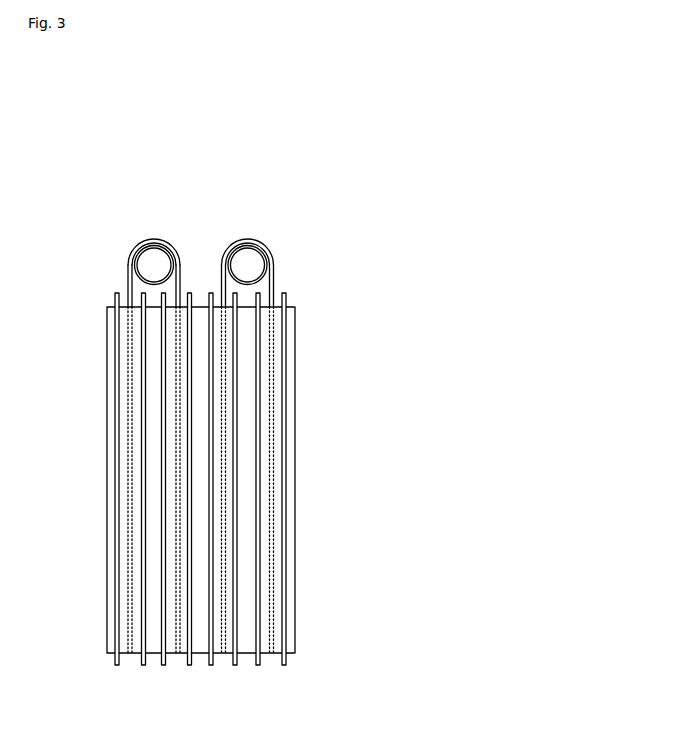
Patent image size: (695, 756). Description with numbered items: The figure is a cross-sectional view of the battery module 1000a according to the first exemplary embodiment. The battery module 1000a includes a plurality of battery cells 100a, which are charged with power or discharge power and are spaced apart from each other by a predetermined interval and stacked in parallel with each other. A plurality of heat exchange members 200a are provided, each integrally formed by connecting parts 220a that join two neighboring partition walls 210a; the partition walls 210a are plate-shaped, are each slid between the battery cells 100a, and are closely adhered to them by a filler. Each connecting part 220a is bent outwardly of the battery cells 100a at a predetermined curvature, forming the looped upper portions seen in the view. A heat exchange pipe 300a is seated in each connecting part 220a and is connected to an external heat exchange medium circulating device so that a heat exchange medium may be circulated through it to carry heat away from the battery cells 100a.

The battery module 1000a is at (218, 401).
The battery cell 100a is at (229, 673).
The heat exchange member 200a is at (202, 399).
The partition wall 210a is at (175, 331).
The connecting part 220a is at (238, 242).
The heat exchange pipe 300a is at (131, 266).